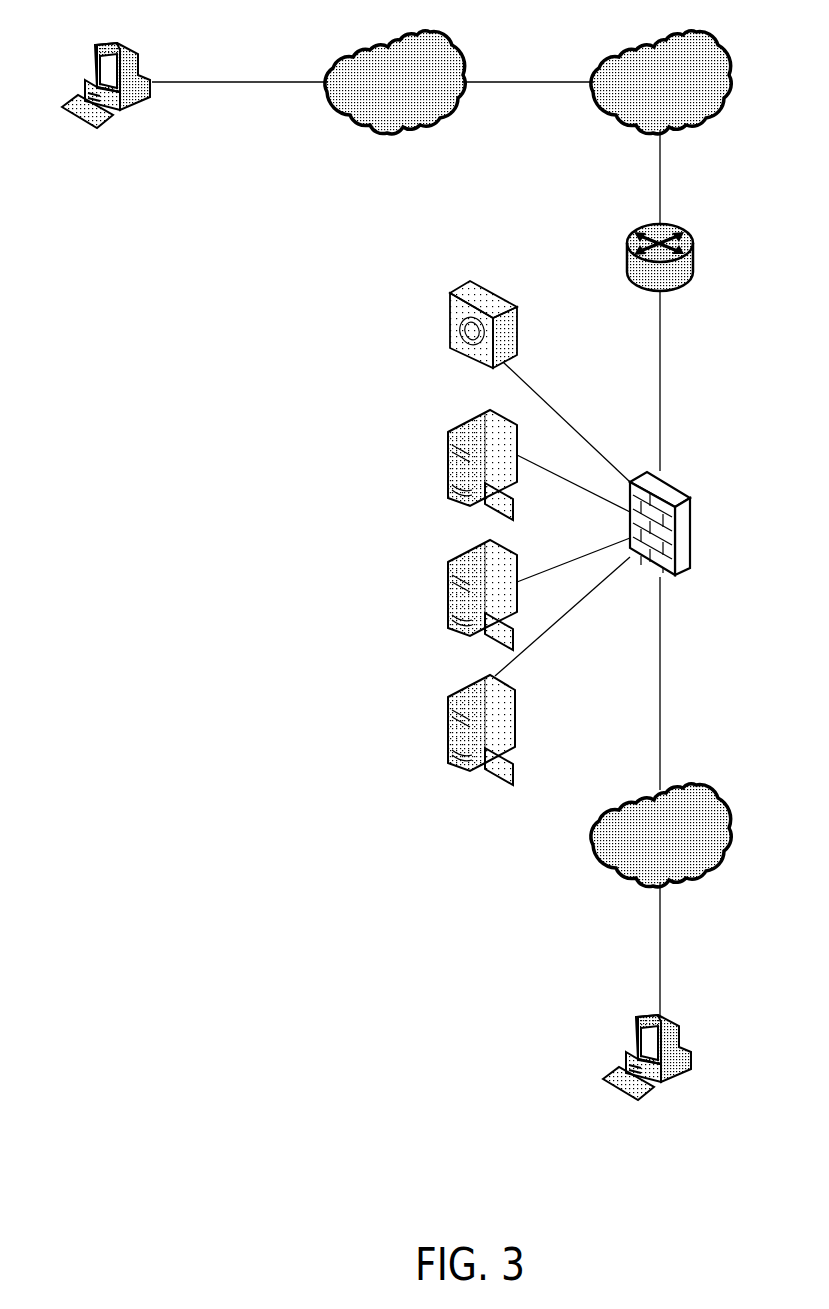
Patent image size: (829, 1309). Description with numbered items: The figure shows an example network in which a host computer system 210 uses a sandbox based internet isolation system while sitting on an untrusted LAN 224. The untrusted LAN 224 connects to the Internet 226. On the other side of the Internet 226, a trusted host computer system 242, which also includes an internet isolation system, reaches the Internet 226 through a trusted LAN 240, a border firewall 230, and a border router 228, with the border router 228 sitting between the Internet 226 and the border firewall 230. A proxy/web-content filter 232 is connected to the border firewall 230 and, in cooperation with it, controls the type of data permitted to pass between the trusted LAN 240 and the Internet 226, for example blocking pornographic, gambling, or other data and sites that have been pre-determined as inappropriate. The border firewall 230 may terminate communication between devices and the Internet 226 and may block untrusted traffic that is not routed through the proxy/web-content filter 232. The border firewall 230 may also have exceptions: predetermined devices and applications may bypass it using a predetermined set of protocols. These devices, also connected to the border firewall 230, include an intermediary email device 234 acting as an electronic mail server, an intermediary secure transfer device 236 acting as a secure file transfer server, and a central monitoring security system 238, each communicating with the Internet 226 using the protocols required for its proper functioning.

The host computer system 210 is at (98, 40).
The untrusted LAN 224 is at (437, 36).
The Internet 226 is at (697, 36).
The border router 228 is at (669, 228).
The border firewall 230 is at (682, 498).
The proxy/web-content filter 232 is at (461, 296).
The intermediary email device 234 is at (461, 436).
The intermediary secure transfer device 236 is at (461, 566).
The central monitoring security system 238 is at (461, 701).
The trusted LAN 240 is at (700, 790).
The trusted host computer system 242 is at (680, 1022).